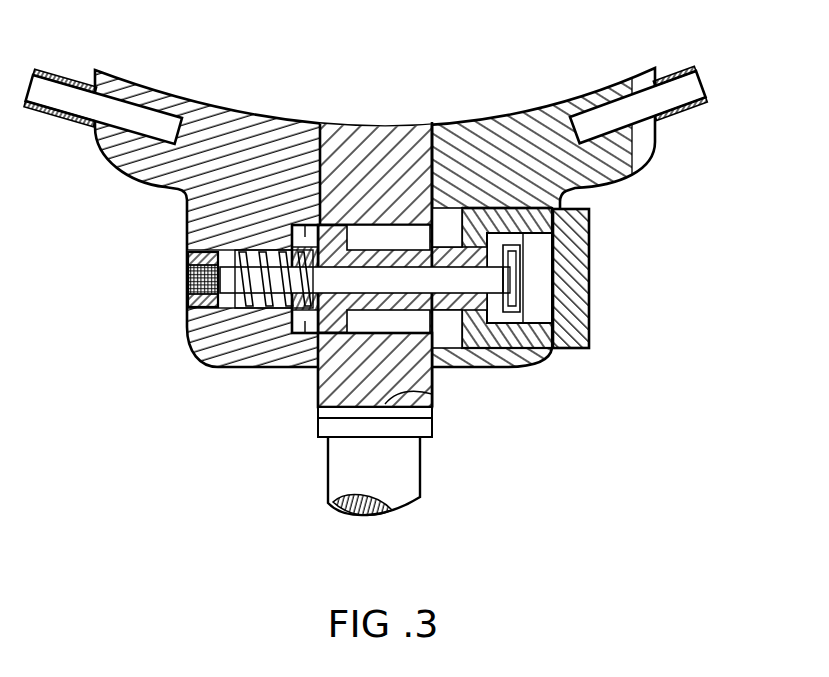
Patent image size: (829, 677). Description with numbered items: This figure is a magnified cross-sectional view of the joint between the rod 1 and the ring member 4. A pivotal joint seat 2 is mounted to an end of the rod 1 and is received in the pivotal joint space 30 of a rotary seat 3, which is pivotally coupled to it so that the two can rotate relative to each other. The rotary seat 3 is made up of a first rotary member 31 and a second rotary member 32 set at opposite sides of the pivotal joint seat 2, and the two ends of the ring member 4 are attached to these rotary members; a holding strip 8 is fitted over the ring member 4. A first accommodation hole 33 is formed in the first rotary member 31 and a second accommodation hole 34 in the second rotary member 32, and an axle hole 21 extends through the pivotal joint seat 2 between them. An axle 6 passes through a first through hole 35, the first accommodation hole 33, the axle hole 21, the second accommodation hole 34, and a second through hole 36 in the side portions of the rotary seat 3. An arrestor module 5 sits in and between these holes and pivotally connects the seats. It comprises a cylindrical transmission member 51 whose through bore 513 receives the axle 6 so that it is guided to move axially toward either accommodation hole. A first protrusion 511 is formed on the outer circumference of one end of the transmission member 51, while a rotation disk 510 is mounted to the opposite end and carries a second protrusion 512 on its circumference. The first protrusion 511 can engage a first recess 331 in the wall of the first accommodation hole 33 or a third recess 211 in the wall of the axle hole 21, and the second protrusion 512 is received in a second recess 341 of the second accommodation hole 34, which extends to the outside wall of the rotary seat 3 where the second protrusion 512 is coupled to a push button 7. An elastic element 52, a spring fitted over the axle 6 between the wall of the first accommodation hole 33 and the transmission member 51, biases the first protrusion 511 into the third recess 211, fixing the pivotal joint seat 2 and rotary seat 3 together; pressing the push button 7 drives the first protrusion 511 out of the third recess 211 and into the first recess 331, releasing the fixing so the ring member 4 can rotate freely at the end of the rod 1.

The rod 1 is at (393, 474).
The pivotal joint seat 2 is at (372, 230).
The axle hole 21 is at (430, 405).
The third recess 211 is at (400, 229).
The rotary seat 3 is at (558, 98).
The pivotal joint space 30 is at (330, 368).
The first rotary member 31 is at (167, 167).
The second rotary member 32 is at (588, 163).
The first accommodation hole 33 is at (270, 237).
The first recess 331 is at (310, 222).
The second accommodation hole 34 is at (447, 222).
The second recess 341 is at (500, 343).
The first through hole 35 is at (186, 281).
The second through hole 36 is at (505, 280).
The ring member 4 is at (694, 92).
The arrestor module 5 is at (372, 200).
The transmission member 51 is at (330, 438).
The rotation disk 510 is at (465, 245).
The first protrusion 511 is at (302, 335).
The second protrusion 512 is at (528, 337).
The through bore 513 is at (435, 352).
The elastic element 52 is at (245, 308).
The axle 6 is at (462, 343).
The push button 7 is at (575, 265).
The holding strip 8 is at (673, 78).